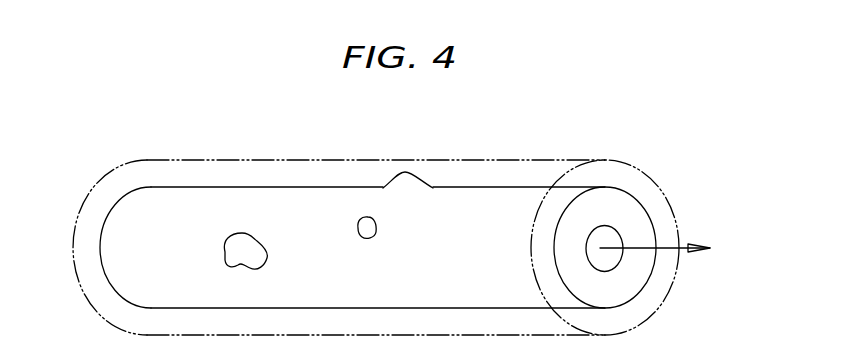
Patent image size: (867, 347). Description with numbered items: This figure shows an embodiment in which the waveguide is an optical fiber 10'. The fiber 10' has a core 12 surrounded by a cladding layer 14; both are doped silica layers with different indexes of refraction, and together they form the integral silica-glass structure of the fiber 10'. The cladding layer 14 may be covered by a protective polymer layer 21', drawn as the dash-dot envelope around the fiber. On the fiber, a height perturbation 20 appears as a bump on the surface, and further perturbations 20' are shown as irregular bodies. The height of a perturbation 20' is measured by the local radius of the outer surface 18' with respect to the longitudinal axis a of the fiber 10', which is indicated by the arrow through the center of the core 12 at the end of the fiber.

The optical fiber 10' is at (360, 197).
The core 12 is at (608, 248).
The cladding layer 14 is at (613, 207).
The outer surface 18' is at (476, 271).
The height perturbation 20 is at (402, 148).
The perturbation 20' is at (307, 262).
The protective polymer layer 21' is at (373, 222).
The longitudinal axis a is at (666, 247).